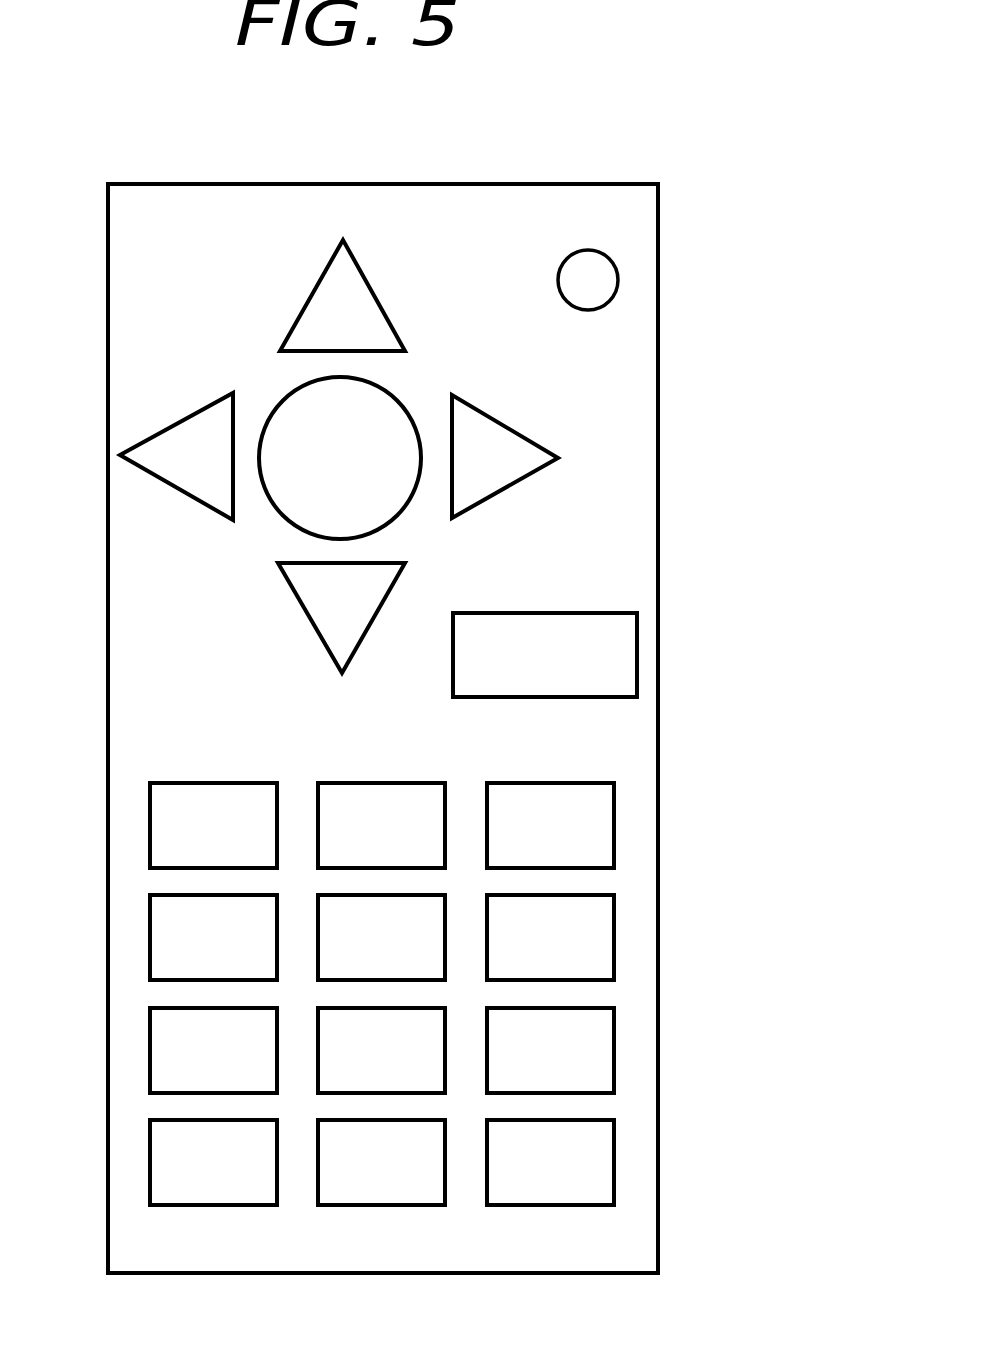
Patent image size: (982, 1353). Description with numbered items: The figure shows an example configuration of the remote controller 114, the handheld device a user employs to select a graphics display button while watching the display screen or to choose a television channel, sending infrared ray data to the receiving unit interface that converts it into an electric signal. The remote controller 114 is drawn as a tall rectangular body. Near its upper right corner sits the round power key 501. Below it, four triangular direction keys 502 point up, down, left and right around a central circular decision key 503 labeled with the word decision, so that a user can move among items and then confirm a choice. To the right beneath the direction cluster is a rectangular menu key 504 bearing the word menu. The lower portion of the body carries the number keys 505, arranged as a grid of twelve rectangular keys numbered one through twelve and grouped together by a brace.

The remote controller 114 is at (658, 280).
The power key 501 is at (589, 250).
The direction keys 502 is at (311, 294).
The decision key 503 is at (403, 400).
The menu key 504 is at (560, 613).
The number keys 505 is at (703, 767).